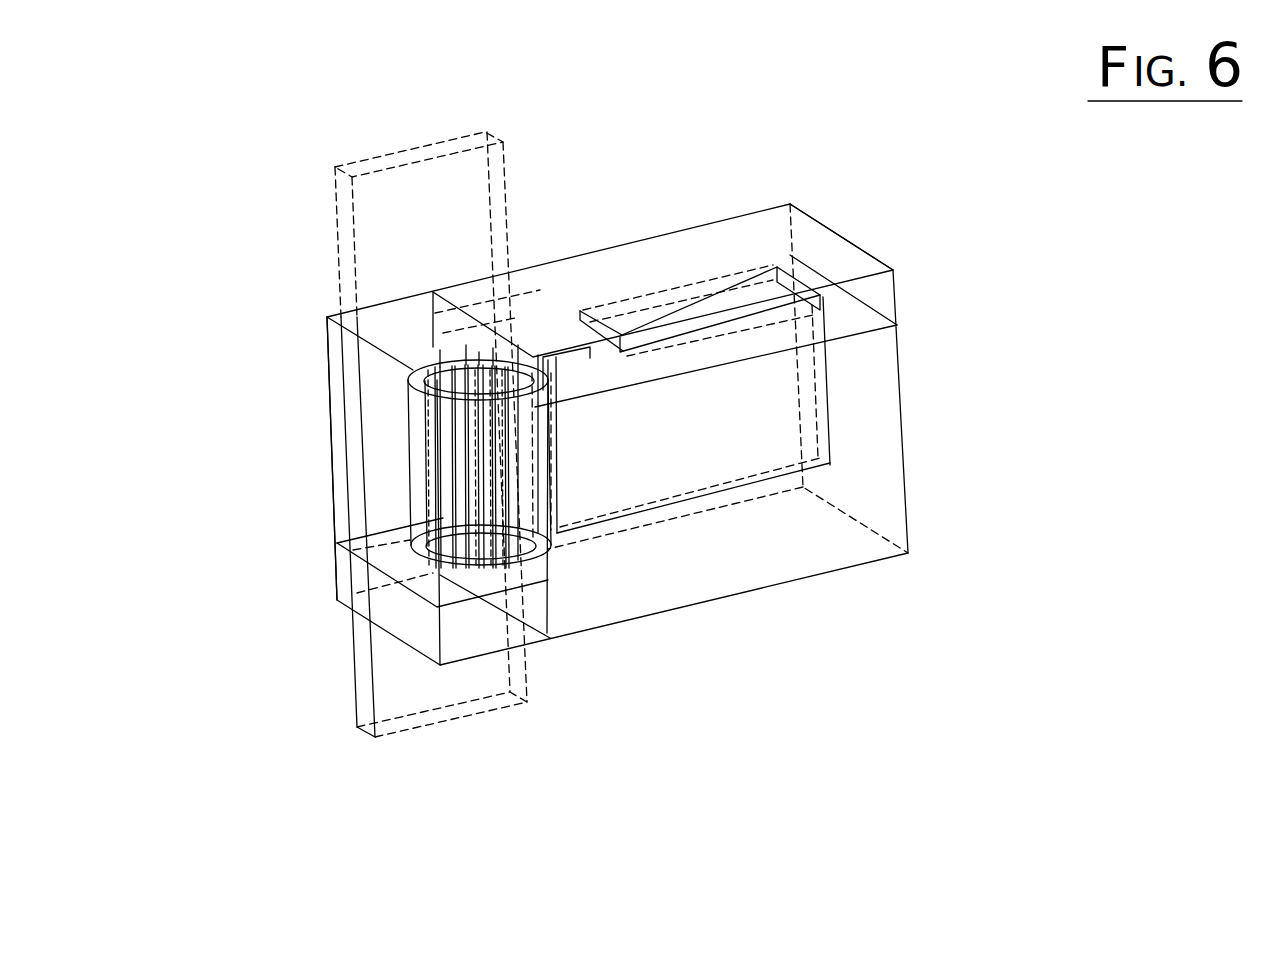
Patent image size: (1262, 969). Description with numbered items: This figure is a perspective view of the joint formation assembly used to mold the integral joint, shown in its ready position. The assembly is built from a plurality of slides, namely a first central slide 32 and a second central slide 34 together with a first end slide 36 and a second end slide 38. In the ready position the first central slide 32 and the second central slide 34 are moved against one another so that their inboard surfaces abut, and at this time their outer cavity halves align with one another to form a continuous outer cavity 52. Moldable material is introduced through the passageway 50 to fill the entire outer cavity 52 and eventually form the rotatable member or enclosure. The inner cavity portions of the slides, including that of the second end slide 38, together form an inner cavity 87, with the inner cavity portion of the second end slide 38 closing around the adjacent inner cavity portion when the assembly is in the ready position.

The first central slide 32 is at (328, 418).
The second central slide 34 is at (907, 463).
The first end slide 36 is at (857, 244).
The second end slide 38 is at (337, 574).
The passageway 50 is at (583, 350).
The outer cavity 52 is at (421, 364).
The inner cavity 87 is at (478, 353).